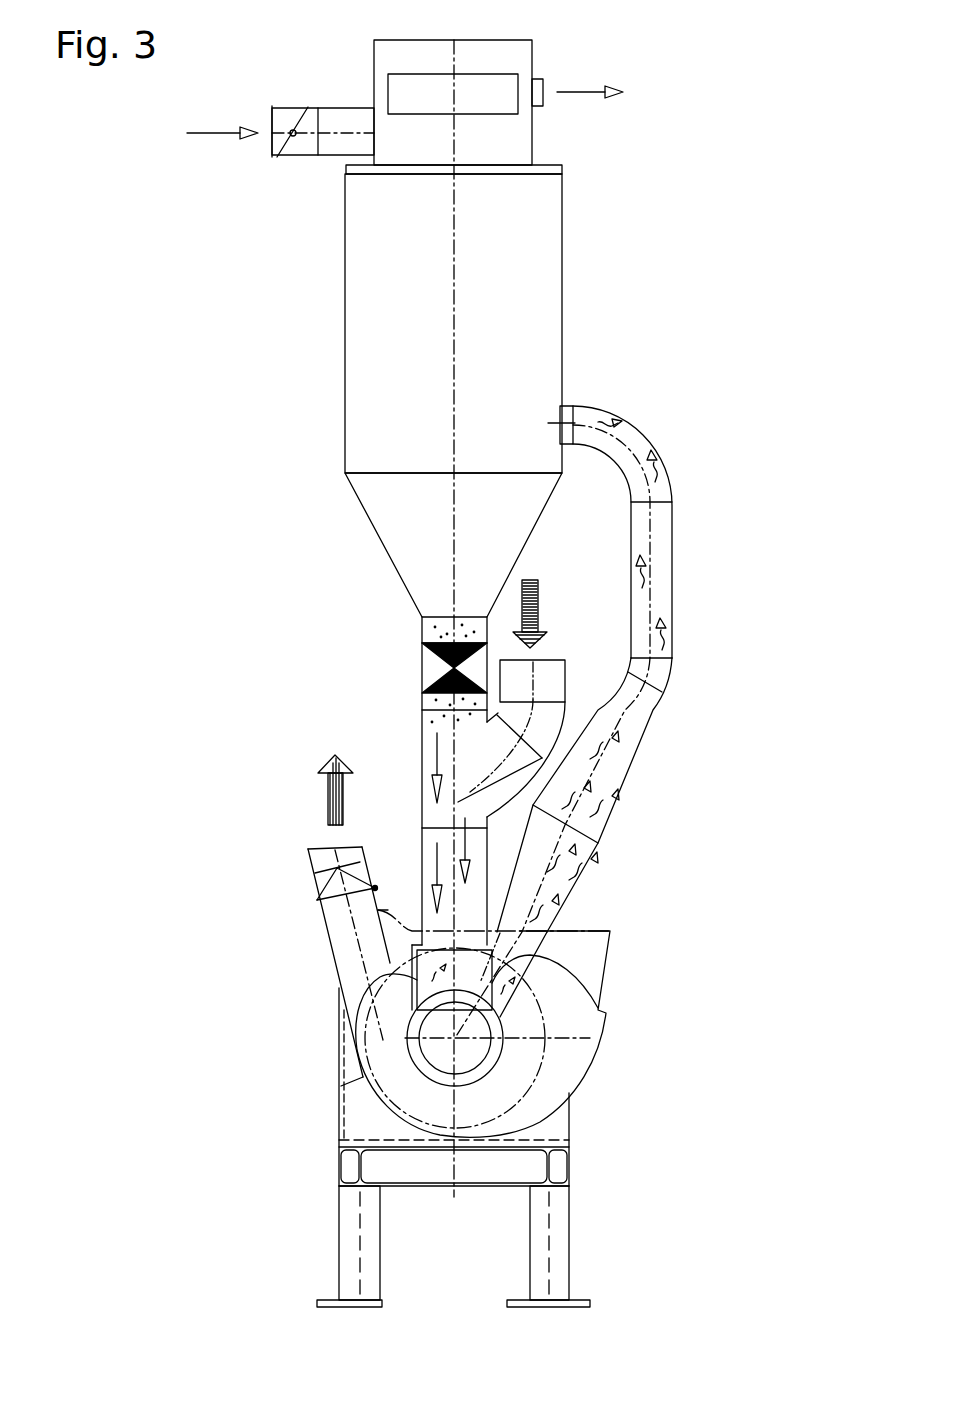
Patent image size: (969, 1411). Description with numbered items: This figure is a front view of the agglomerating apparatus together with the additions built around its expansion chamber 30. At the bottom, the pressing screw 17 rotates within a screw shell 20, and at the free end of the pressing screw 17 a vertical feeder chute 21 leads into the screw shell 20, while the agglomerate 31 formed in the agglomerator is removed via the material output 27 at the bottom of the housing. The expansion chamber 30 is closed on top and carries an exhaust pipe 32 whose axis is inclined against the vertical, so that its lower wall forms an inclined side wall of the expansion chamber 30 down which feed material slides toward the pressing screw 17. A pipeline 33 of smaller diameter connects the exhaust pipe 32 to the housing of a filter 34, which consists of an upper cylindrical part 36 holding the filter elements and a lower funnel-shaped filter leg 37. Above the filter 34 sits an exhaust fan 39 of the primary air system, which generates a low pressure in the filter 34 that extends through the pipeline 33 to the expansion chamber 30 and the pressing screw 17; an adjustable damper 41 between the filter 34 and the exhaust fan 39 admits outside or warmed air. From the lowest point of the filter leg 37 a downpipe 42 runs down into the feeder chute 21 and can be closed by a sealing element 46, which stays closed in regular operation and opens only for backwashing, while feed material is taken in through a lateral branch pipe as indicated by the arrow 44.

The pressing screw 17 is at (540, 1063).
The screw shell 20 is at (340, 1117).
The feeder chute 21 is at (598, 1008).
The material output 27 is at (335, 938).
The expansion chamber 30 is at (340, 1033).
The agglomerate 31 is at (328, 802).
The exhaust pipe 32 is at (580, 888).
The pipeline 33 is at (672, 578).
The filter 34 is at (536, 313).
The upper cylindrical part 36 is at (563, 342).
The funnel-shaped filter leg 37 is at (372, 535).
The exhaust fan 39 is at (533, 60).
The adjustable damper 41 is at (293, 157).
The downpipe 42 is at (422, 628).
The arrow 44 is at (540, 590).
The sealing element 46 is at (422, 682).